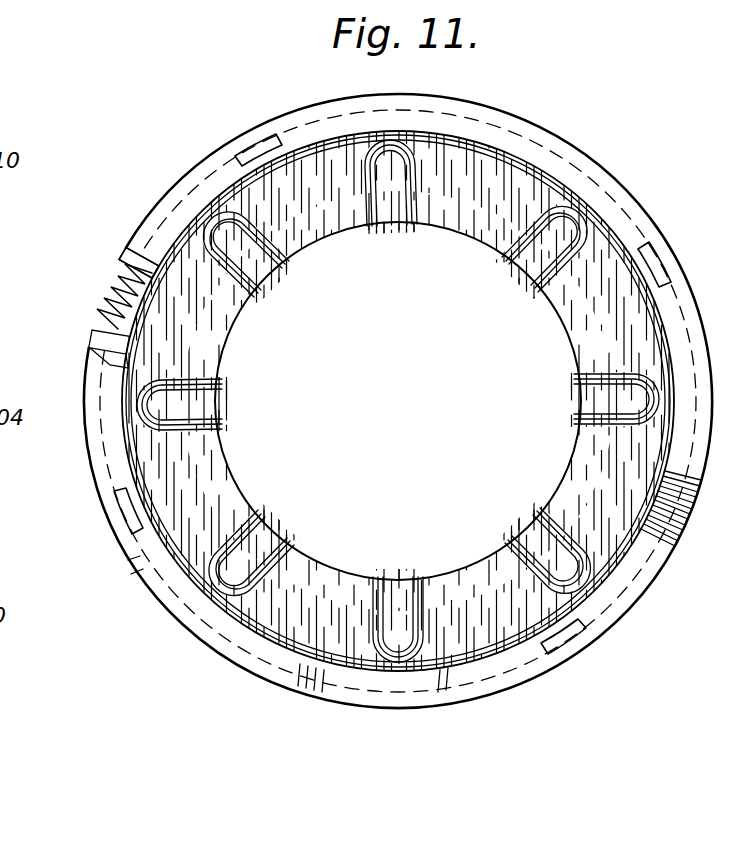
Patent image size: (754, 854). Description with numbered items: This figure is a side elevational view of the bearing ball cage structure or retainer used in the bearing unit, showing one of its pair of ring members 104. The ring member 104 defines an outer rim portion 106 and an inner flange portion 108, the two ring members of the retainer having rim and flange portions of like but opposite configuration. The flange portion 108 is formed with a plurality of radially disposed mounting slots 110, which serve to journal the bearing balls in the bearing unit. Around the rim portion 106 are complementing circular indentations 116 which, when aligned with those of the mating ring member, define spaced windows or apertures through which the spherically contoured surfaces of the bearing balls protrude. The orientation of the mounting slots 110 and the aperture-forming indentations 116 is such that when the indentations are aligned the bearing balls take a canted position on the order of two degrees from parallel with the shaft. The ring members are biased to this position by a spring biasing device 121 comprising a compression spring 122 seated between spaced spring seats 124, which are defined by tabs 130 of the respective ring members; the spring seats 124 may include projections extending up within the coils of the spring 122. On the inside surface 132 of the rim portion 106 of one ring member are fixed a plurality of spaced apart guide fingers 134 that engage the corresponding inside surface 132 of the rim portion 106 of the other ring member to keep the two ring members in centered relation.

The ring member 104 is at (130, 252).
The rim portion 106 is at (112, 462).
The flange portion 108 is at (278, 263).
The mounting slots 110 is at (256, 264).
The circular indentations 116 is at (348, 104).
The spring biasing device 121 is at (90, 306).
The compression spring 122 is at (118, 282).
The spring seats 124 is at (156, 265).
The tabs 130 is at (148, 254).
The inside surface 132 is at (130, 565).
The guide fingers 134 is at (272, 140).